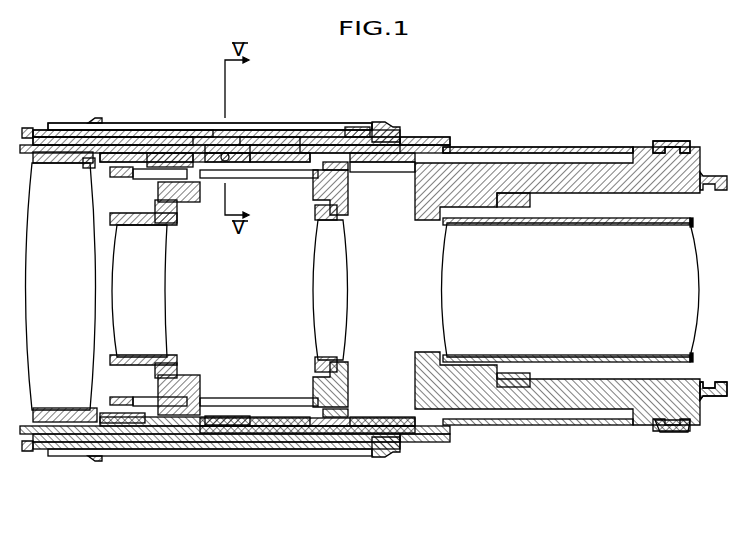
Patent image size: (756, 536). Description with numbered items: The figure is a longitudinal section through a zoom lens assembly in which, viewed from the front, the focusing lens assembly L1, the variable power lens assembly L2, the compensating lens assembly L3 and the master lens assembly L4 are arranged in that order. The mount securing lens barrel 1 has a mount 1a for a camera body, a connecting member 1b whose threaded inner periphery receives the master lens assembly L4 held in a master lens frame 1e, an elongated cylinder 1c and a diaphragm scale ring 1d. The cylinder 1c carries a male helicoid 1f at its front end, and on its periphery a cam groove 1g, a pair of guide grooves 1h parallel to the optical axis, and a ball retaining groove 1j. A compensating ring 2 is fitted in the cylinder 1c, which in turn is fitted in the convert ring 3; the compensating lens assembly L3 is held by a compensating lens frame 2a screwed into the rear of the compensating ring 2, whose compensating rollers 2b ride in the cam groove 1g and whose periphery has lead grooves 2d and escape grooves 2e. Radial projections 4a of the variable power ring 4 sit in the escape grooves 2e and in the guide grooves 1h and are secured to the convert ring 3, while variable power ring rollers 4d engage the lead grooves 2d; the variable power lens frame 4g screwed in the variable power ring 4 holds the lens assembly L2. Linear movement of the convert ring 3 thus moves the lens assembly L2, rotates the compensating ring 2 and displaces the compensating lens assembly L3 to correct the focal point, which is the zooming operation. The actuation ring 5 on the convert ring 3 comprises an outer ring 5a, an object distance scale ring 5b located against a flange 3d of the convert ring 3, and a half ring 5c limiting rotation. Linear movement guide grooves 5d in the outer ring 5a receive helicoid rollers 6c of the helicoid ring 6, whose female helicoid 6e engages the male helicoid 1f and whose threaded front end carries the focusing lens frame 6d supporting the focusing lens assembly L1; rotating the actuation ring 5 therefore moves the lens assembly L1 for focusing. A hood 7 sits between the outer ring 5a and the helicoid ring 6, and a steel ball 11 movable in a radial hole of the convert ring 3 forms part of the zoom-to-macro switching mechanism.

The mount securing lens barrel 1 is at (638, 143).
The mount 1a is at (717, 404).
The connecting member 1b is at (674, 152).
The elongated cylinder 1c is at (525, 150).
The diaphragm scale ring 1d is at (672, 434).
The master lens frame 1e is at (682, 218).
The male helicoid 1f is at (104, 178).
The cam groove 1g is at (398, 164).
The guide grooves 1h is at (258, 426).
The ball retaining groove 1j is at (274, 153).
The compensating ring 2 is at (296, 178).
The compensating lens frame 2a is at (315, 212).
The compensating rollers 2b is at (331, 158).
The lead grooves 2d is at (262, 148).
The escape grooves 2e is at (285, 428).
The convert ring 3 is at (446, 146).
The flange 3d is at (208, 432).
The variable power ring 4 is at (185, 205).
The radial projections 4a is at (200, 380).
The variable power ring rollers 4d is at (200, 158).
The variable power lens frame 4g is at (178, 362).
The actuation ring 5 is at (383, 123).
The outer ring 5a is at (94, 120).
The object distance scale ring 5b is at (425, 140).
The half ring 5c is at (233, 155).
The linear movement guide grooves 5d is at (180, 122).
The helicoid ring 6 is at (163, 143).
The helicoid rollers 6c is at (355, 130).
The focusing lens frame 6d is at (47, 131).
The female helicoid 6e is at (130, 152).
The hood 7 is at (28, 128).
The steel ball 11 is at (222, 148).
The focusing lens assembly L1 is at (62, 287).
The variable power lens assembly L2 is at (167, 320).
The compensating lens assembly L3 is at (348, 320).
The master lens assembly L4 is at (578, 279).